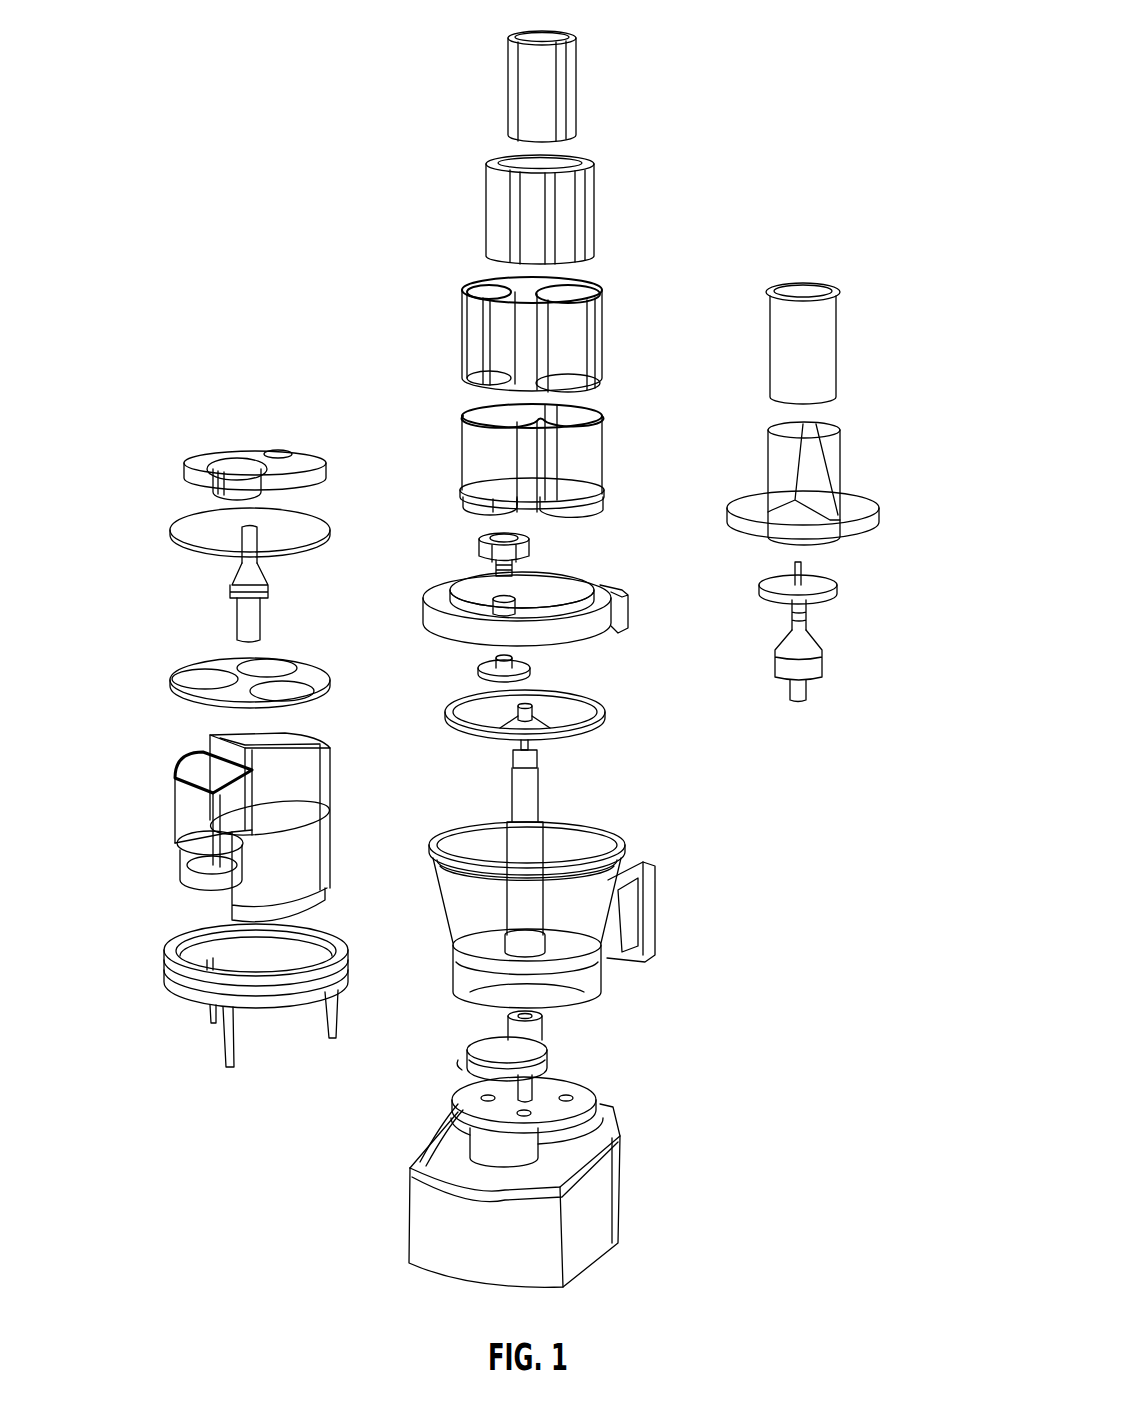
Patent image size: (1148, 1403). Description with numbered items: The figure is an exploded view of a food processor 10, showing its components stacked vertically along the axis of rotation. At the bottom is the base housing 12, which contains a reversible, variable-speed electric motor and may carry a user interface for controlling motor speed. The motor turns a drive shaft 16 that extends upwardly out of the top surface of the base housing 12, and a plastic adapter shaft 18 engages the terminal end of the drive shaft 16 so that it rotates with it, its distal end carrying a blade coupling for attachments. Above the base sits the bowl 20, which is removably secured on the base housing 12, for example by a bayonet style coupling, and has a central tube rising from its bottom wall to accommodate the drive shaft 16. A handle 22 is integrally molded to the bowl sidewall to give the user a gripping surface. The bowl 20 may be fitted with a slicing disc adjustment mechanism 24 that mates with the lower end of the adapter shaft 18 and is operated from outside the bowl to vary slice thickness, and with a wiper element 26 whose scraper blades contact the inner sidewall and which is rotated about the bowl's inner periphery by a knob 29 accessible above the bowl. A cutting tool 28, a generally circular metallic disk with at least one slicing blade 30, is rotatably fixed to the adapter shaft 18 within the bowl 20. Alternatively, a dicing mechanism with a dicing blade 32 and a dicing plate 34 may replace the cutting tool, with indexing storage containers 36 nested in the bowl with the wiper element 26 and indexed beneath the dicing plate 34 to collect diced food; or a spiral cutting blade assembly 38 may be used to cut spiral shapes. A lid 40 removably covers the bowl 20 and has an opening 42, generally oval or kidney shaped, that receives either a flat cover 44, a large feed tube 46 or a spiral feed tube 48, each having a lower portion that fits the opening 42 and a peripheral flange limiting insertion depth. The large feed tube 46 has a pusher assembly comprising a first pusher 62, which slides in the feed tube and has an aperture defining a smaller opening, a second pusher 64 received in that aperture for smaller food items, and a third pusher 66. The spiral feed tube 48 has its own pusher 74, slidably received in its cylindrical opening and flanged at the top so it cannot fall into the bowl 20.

The food processor 10 is at (750, 32).
The base housing 12 is at (618, 1158).
The drive shaft 16 is at (460, 1104).
The adapter shaft 18 is at (550, 790).
The bowl 20 is at (610, 982).
The handle 22 is at (643, 915).
The slicing disc adjustment mechanism 24 is at (548, 1040).
The wiper element 26 is at (168, 968).
The cutting tool 28 is at (582, 748).
The knob 29 is at (542, 545).
The slicing blade 30 is at (540, 724).
The dicing blade 32 is at (175, 528).
The dicing plate 34 is at (175, 680).
The indexing storage containers 36 is at (176, 812).
The spiral cutting blade assembly 38 is at (810, 640).
The lid 40 is at (610, 645).
The opening 42 is at (552, 596).
The flat cover 44 is at (190, 470).
The large feed tube 46 is at (460, 450).
The spiral feed tube 48 is at (840, 468).
The first pusher 62 is at (462, 332).
The second pusher 64 is at (487, 206).
The third pusher 66 is at (577, 78).
The pusher 74 is at (840, 292).